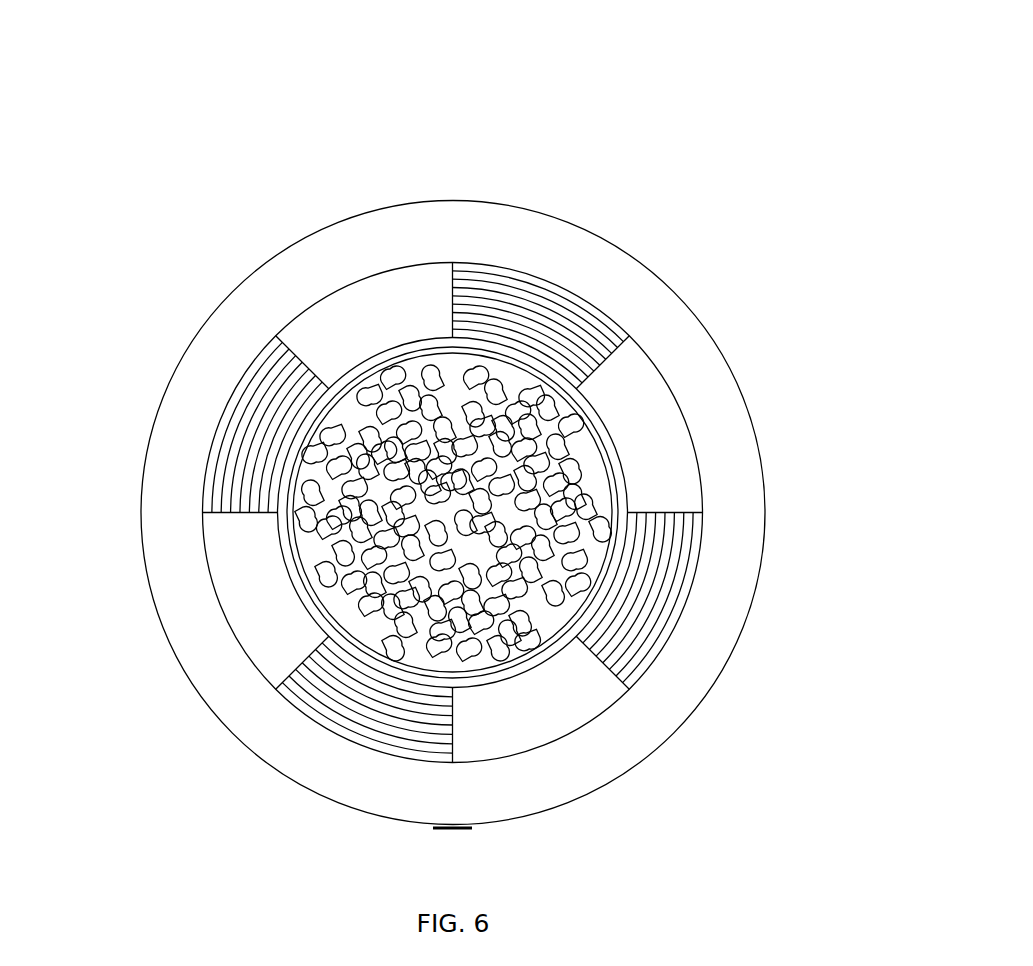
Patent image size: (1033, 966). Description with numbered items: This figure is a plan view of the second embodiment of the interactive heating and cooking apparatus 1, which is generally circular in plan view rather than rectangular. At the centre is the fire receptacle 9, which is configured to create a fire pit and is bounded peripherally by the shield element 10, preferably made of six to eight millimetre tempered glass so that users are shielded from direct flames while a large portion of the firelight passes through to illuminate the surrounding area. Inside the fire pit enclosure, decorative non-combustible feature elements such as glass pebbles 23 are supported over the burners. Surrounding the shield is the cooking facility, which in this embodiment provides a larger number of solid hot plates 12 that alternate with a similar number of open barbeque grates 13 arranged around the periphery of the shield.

The interactive heating and cooking apparatus 1 is at (612, 108).
The fire receptacle 9 is at (600, 403).
The shield element 10 is at (266, 556).
The solid hot plates 12 is at (372, 310).
The open barbeque grates 13 is at (533, 312).
The glass pebbles 23 is at (258, 357).